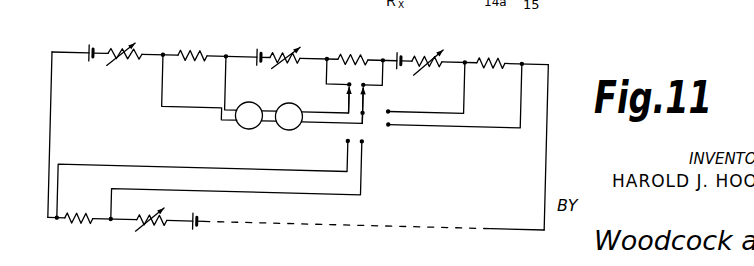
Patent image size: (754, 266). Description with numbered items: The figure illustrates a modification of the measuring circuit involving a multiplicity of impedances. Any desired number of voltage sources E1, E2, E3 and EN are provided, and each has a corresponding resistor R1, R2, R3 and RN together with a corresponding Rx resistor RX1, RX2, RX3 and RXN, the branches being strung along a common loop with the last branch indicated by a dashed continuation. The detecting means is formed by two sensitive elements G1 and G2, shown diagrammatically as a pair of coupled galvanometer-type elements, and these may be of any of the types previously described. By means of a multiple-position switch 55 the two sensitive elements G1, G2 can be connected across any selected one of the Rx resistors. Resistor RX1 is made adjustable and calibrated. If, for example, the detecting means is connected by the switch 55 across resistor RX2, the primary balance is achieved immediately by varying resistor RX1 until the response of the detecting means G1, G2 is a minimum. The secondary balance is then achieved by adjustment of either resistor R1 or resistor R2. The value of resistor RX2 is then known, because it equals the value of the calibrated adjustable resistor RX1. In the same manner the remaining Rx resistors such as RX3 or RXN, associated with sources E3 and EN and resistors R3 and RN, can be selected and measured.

The voltage source E1 is at (92, 42).
The resistor R1 is at (117, 38).
The adjustable resistor RX1 is at (182, 42).
The voltage source E2 is at (258, 42).
The resistor R2 is at (283, 44).
The resistor RX2 is at (347, 48).
The voltage source E3 is at (398, 44).
The resistor R3 is at (427, 46).
The resistor RX3 is at (481, 47).
The multiple-position switch 55 is at (349, 92).
The sensitive element G1 is at (247, 125).
The sensitive element G2 is at (285, 124).
The resistor RXN is at (91, 222).
The resistor RN is at (157, 220).
The voltage source EN is at (200, 227).